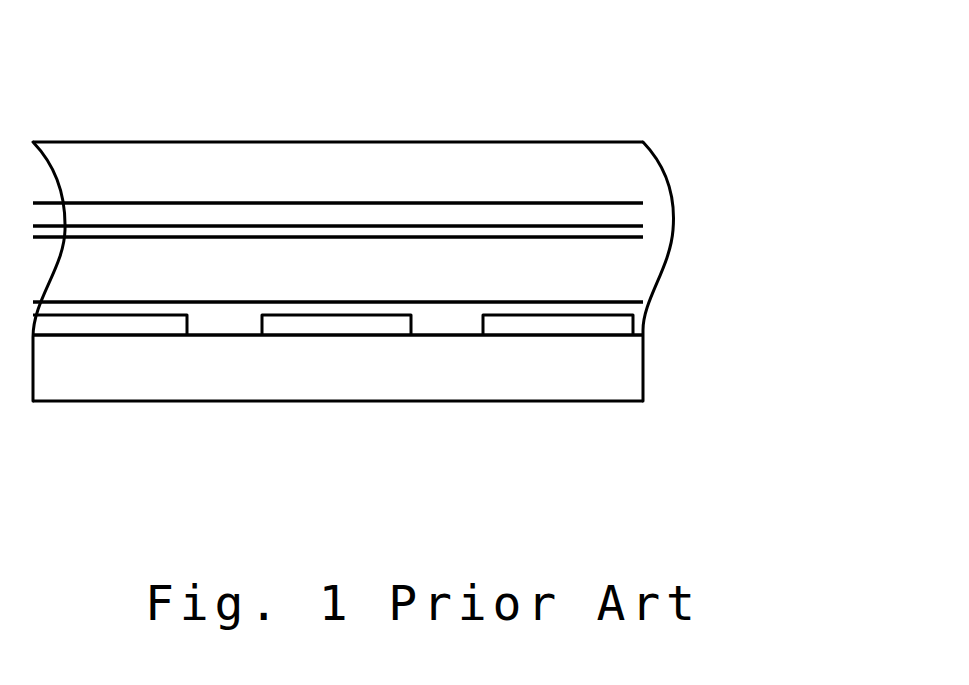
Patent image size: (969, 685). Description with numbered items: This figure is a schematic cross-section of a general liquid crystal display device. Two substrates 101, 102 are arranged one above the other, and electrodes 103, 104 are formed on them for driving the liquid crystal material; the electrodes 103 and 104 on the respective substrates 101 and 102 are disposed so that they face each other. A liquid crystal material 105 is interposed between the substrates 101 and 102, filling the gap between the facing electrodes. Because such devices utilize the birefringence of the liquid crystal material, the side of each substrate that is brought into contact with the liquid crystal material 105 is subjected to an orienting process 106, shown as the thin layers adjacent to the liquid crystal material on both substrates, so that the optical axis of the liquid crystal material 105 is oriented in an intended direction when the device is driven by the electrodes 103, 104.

The substrate 101 is at (480, 185).
The substrate 102 is at (558, 377).
The electrode 103 is at (590, 212).
The electrode 104 is at (583, 323).
The liquid crystal material 105 is at (635, 276).
The orienting process 106 is at (655, 224).